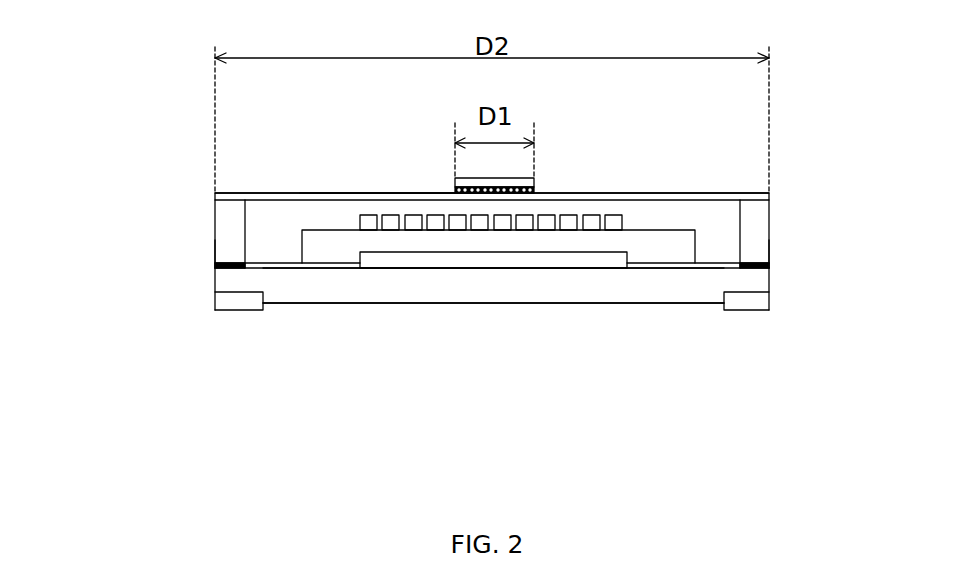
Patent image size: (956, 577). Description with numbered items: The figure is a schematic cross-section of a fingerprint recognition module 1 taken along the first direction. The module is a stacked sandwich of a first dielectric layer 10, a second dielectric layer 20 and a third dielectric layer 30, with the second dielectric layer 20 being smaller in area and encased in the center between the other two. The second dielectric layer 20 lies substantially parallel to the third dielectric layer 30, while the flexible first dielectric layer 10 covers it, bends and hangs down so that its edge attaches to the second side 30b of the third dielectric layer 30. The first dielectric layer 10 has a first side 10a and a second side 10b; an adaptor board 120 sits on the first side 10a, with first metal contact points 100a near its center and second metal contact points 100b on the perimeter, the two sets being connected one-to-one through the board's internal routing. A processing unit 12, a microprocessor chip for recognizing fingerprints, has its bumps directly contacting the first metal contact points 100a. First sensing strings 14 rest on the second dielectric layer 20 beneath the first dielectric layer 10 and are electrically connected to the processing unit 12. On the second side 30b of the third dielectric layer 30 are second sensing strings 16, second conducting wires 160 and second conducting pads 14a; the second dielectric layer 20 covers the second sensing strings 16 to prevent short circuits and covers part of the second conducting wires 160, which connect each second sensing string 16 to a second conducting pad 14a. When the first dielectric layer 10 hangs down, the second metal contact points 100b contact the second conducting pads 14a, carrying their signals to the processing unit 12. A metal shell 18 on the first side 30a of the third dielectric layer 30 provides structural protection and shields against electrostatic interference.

The fingerprint recognition module 1 is at (874, 86).
The first dielectric layer 10 is at (252, 245).
The first side of first dielectric layer 10a is at (710, 193).
The second side of first dielectric layer 10b is at (276, 256).
The processing unit 12 is at (518, 178).
The first sensing strings 14 is at (373, 215).
The second conducting pads 14a is at (215, 267).
The second sensing strings 16 is at (388, 268).
The metal shell 18 is at (769, 310).
The second dielectric layer 20 is at (638, 235).
The third dielectric layer 30 is at (772, 283).
The first side of third dielectric layer 30a is at (447, 306).
The second side of third dielectric layer 30b is at (558, 271).
The first metal contact points 100a is at (455, 193).
The second metal contact points 100b is at (215, 263).
The adaptor board 120 is at (247, 193).
The second conducting wires 160 is at (693, 268).